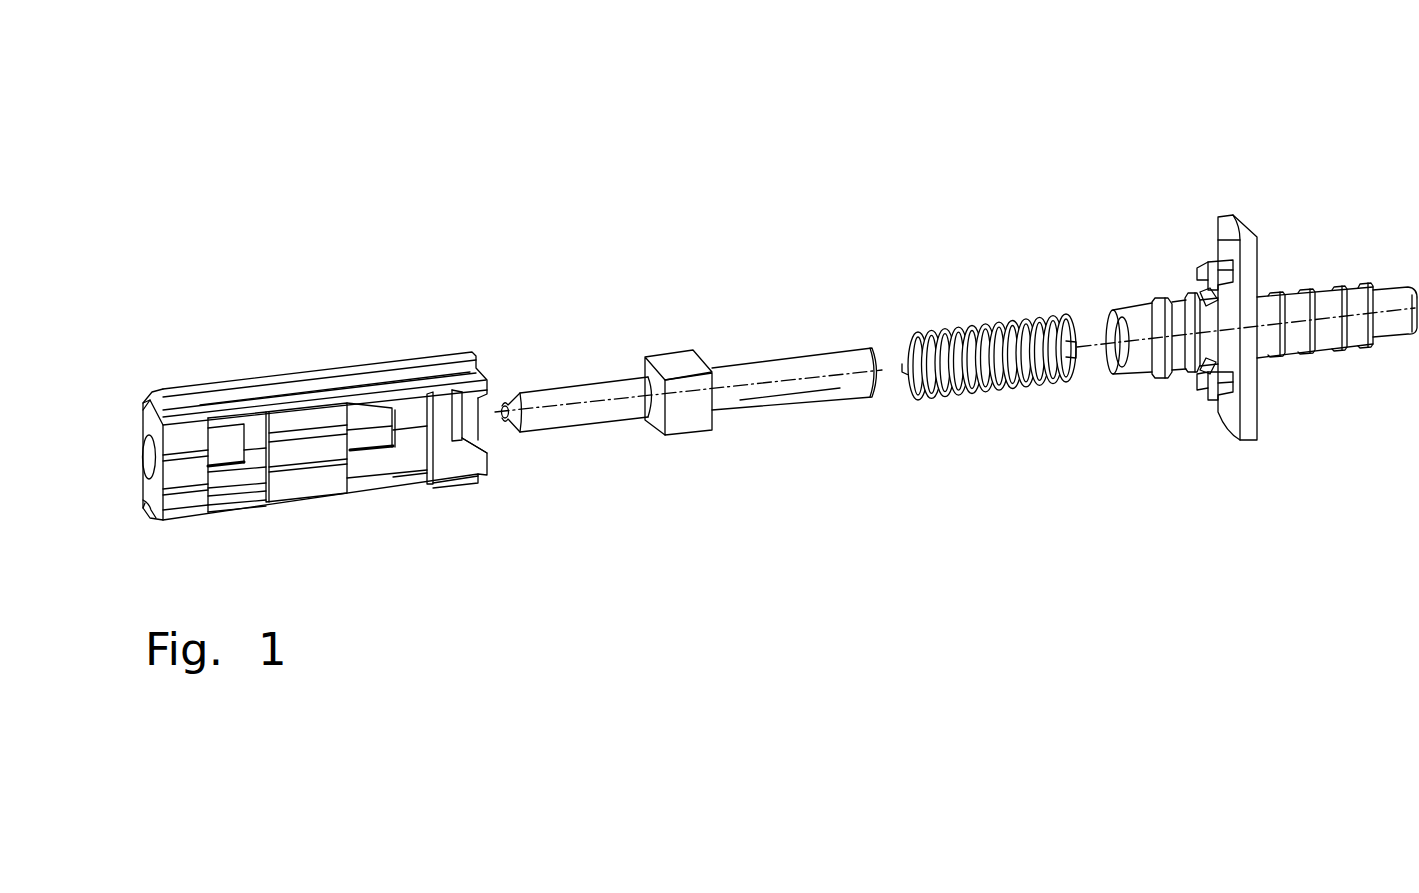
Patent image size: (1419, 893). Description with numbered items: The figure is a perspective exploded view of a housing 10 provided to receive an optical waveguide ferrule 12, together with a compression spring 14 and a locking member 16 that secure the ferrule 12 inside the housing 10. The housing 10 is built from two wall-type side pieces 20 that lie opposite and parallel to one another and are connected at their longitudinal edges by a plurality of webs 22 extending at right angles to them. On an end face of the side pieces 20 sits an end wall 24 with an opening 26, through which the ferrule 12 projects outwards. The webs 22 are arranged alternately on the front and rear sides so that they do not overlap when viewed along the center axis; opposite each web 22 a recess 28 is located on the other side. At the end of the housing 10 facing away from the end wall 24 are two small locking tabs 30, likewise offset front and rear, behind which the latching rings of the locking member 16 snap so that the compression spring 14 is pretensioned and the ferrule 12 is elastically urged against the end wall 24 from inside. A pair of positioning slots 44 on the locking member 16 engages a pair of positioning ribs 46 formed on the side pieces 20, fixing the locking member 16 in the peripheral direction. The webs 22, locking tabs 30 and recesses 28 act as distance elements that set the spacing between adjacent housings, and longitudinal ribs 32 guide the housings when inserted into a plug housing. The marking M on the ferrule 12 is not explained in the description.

The housing 10 is at (262, 217).
The optical waveguide ferrule 12 is at (660, 167).
The compression spring 14 is at (970, 127).
The locking member 16 is at (1227, 97).
The side piece 20 is at (303, 405).
The web 22 is at (191, 440).
The end wall 24 is at (148, 490).
The opening 26 is at (140, 463).
The recess 28 is at (252, 437).
The locking tab 30 is at (483, 417).
The longitudinal rib 32 is at (262, 378).
The positioning slot 44 is at (1207, 263).
The positioning rib 46 is at (468, 352).
The marking M is at (798, 380).